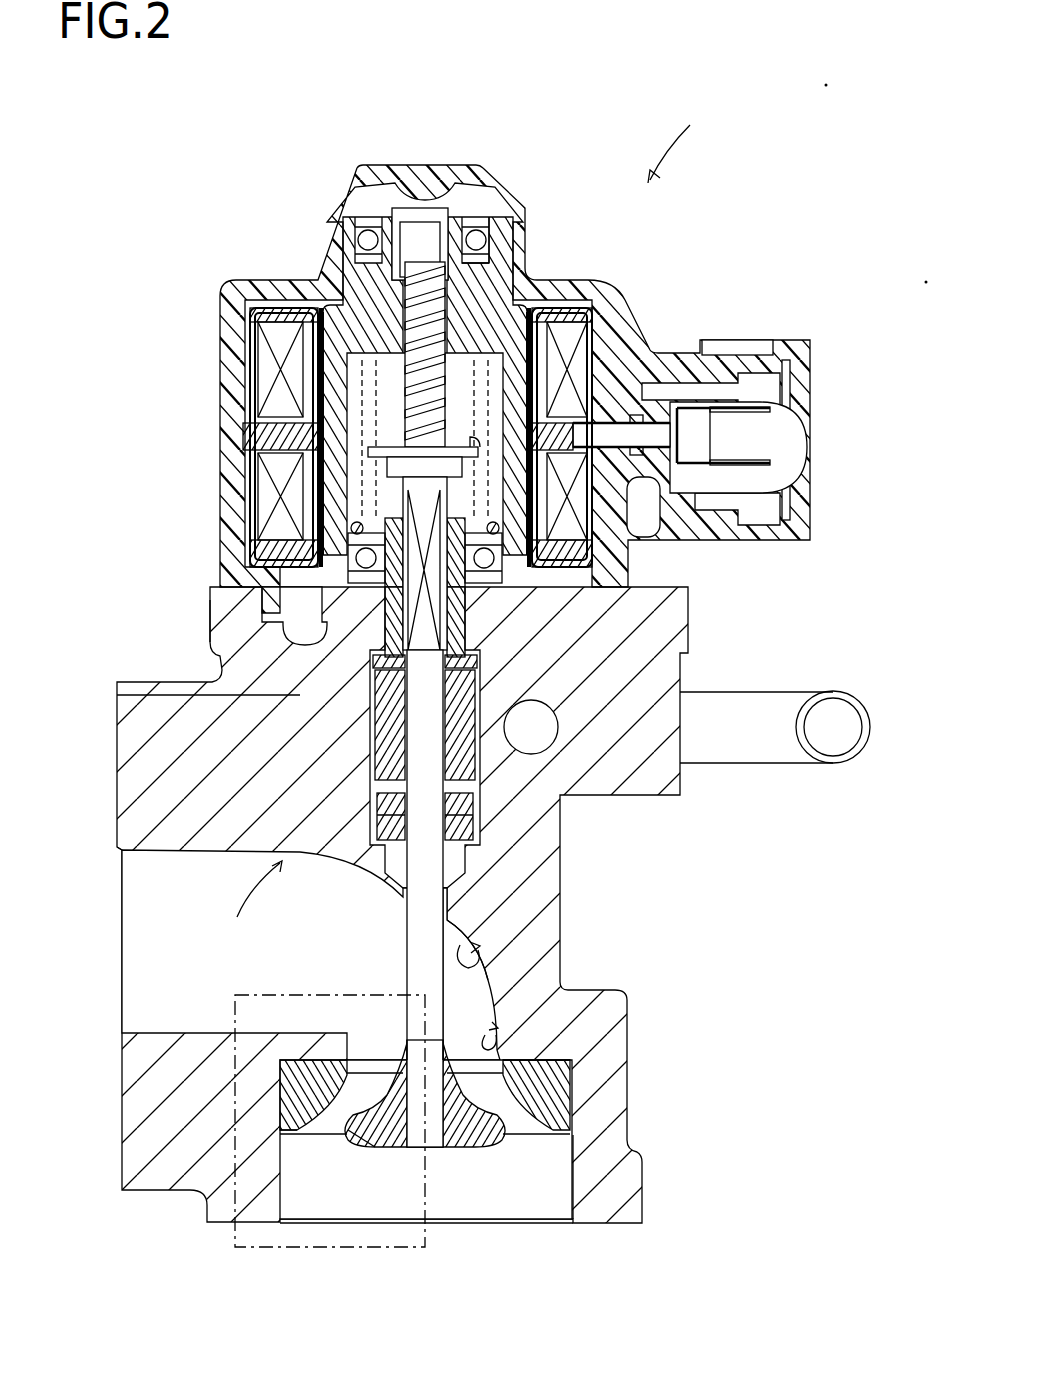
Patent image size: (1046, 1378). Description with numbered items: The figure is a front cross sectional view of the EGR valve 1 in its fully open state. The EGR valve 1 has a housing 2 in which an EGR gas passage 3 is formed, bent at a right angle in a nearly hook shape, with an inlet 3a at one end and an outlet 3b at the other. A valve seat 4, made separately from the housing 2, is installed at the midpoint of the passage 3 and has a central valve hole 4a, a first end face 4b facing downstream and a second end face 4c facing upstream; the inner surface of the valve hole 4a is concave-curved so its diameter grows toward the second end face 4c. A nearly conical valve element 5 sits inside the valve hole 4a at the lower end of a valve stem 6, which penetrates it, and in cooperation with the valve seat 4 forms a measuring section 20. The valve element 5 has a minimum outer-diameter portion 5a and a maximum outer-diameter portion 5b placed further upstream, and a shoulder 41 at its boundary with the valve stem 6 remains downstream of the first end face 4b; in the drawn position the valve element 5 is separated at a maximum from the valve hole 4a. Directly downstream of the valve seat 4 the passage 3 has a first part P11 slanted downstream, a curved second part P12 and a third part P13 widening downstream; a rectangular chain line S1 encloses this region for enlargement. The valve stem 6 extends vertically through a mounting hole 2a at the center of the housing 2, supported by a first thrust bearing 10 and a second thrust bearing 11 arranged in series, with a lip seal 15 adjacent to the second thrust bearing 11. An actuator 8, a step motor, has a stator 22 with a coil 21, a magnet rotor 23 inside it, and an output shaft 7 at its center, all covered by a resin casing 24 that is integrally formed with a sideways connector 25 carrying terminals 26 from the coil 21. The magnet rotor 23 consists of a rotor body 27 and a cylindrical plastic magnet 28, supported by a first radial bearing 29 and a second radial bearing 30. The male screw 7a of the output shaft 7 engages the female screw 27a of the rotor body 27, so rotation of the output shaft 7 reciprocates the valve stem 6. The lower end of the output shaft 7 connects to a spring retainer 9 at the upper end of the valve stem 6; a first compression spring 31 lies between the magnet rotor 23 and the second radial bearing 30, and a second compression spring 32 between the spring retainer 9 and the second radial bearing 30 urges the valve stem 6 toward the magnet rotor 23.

The EGR valve 1 is at (680, 145).
The housing 2 is at (210, 600).
The mounting hole 2a is at (575, 680).
The EGR gas passage 3 is at (178, 1002).
The inlet 3a is at (573, 1203).
The outlet 3b is at (117, 852).
The valve seat 4 is at (570, 1082).
The valve hole 4a is at (348, 1063).
The first end face 4b is at (567, 1043).
The second end face 4c is at (563, 1153).
The valve element 5 is at (477, 1150).
The minimum outer-diameter portion 5a is at (402, 1043).
The maximum outer-diameter portion 5b is at (338, 1133).
The valve stem 6 is at (440, 888).
The output shaft 7 is at (424, 262).
The male screw 7a is at (485, 292).
The actuator 8 is at (235, 395).
The spring retainer 9 is at (368, 451).
The first thrust bearing 10 is at (372, 650).
The second thrust bearing 11 is at (378, 706).
The lip seal 15 is at (475, 820).
The measuring section 20 is at (320, 1120).
The coil 21 is at (280, 360).
The stator 22 is at (250, 308).
The magnet rotor 23 is at (175, 183).
The resin casing 24 is at (212, 605).
The connector 25 is at (700, 352).
The terminals 26 is at (772, 462).
The rotor body 27 is at (332, 325).
The female screw 27a is at (503, 283).
The cylindrical plastic magnet 28 is at (387, 287).
The first radial bearing 29 is at (500, 228).
The second radial bearing 30 is at (465, 612).
The first compression spring 31 is at (490, 567).
The second compression spring 32 is at (560, 520).
The shoulder 41 is at (500, 1050).
The first part P11 is at (500, 1048).
The second part P12 is at (512, 905).
The third part P13 is at (240, 906).
The rectangular chain line S1 is at (293, 1250).